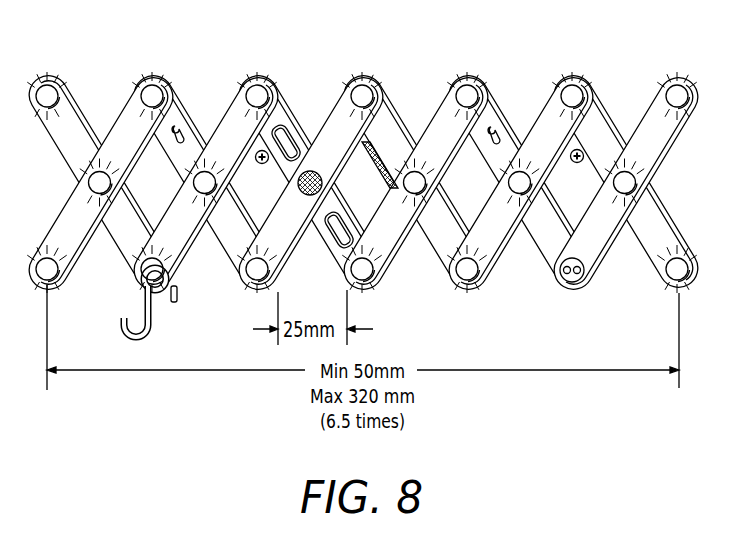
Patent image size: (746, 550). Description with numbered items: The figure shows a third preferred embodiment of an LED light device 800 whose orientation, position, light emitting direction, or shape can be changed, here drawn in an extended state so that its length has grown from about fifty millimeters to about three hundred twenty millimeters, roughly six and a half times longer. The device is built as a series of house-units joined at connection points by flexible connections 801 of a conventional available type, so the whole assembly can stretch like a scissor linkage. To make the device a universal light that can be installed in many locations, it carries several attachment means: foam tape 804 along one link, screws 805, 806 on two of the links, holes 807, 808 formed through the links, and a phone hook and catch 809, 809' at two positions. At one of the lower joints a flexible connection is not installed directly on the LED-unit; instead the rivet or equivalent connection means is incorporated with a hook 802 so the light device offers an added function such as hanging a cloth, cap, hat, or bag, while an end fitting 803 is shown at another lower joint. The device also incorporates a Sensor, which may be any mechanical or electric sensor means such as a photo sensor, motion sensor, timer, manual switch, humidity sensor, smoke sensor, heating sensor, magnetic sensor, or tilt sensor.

The LED light device 800 is at (242, 83).
The flexible connection 801 is at (170, 264).
The hook 802 is at (157, 328).
The end cap with holes 803 is at (582, 277).
The foam tape 804 is at (376, 177).
The screw 805 is at (262, 164).
The screw 806 is at (577, 164).
The hole 807 is at (262, 107).
The hole 808 is at (341, 231).
The phone hook and catch 809 is at (136, 89).
The phone hook and catch 809' is at (524, 79).
The sensor means Sensor is at (316, 171).